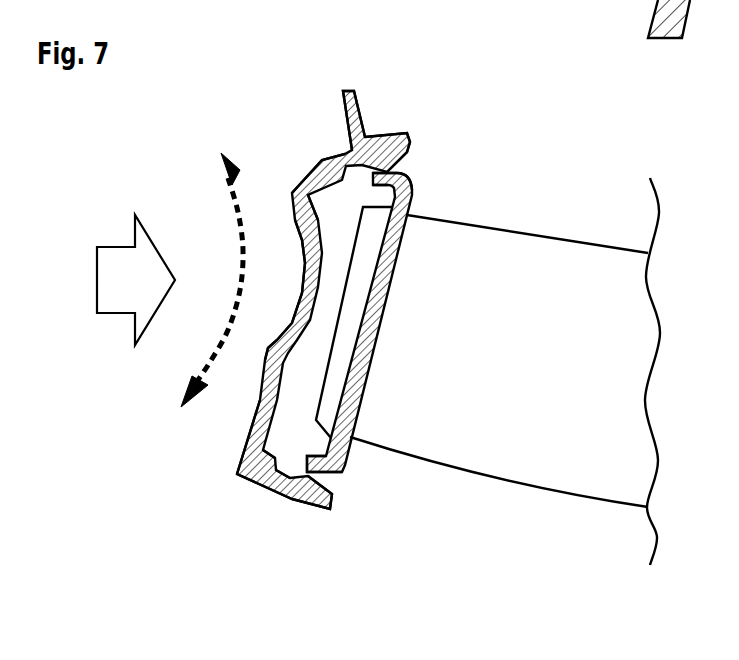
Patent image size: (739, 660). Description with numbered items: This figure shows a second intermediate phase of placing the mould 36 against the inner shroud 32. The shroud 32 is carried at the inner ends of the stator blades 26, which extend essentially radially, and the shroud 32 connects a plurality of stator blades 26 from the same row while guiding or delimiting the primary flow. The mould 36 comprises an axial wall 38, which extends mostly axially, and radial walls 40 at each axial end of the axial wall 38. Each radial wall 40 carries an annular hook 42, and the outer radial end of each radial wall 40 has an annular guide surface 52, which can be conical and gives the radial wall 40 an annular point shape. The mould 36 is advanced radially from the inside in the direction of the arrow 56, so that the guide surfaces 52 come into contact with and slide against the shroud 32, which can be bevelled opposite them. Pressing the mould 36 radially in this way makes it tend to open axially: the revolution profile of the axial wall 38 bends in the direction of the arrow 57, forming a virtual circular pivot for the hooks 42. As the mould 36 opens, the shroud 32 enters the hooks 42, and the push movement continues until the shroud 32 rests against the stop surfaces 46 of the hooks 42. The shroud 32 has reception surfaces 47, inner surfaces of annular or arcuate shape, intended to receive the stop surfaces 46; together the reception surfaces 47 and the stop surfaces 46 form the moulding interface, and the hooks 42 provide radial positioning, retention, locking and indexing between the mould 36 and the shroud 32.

The stator blades 26 is at (505, 371).
The inner shroud 32 is at (375, 297).
The mould 36 is at (266, 153).
The axial wall 38 is at (302, 312).
The radial walls 40 is at (324, 160).
The annular hook 42 is at (373, 157).
The stop surfaces 46 is at (361, 168).
The reception surfaces 47 is at (393, 190).
The annular guide surface 52 is at (412, 153).
The arrow 56 is at (136, 280).
The arrow 57 is at (243, 243).